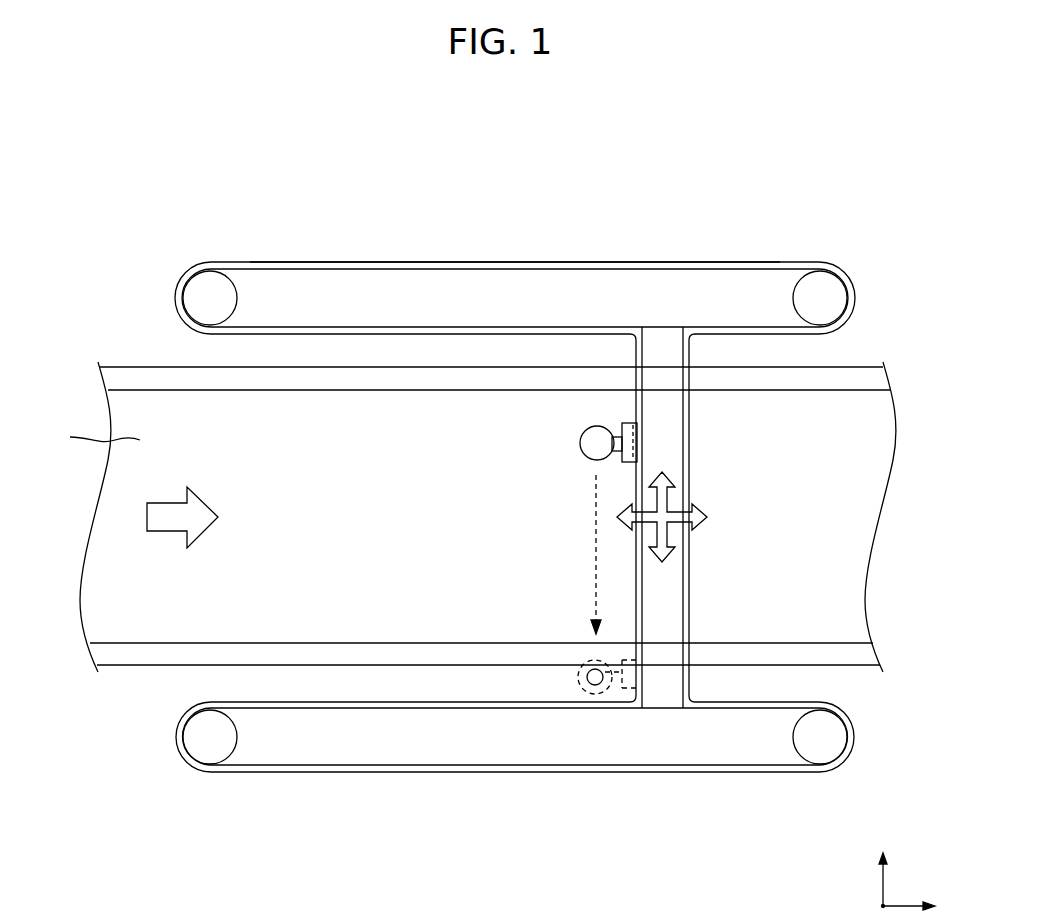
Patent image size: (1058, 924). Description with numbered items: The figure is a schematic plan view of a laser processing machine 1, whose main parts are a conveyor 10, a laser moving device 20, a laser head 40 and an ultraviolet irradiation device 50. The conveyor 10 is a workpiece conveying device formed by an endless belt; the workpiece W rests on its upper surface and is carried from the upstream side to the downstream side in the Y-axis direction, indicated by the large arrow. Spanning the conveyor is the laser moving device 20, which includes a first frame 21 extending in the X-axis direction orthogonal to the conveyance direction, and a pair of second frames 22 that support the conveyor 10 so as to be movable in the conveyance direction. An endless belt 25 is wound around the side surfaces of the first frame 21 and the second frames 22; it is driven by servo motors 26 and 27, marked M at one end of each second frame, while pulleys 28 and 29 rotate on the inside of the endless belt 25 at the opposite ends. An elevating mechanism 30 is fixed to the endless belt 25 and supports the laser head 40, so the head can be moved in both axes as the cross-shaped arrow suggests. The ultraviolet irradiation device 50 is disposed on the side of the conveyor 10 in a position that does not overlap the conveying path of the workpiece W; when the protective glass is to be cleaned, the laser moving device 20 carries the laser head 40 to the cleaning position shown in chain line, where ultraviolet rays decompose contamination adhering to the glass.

The laser processing machine 1 is at (800, 170).
The conveyor 10 is at (134, 354).
The laser moving device 20 is at (639, 256).
The first frame 21 is at (675, 428).
The second frames 22 is at (428, 278).
The endless belt 25 is at (310, 262).
The servo motor 26 is at (212, 278).
The servo motor 27 is at (210, 760).
The pulley 28 is at (820, 275).
The pulley 29 is at (818, 760).
The elevating mechanism 30 is at (622, 425).
The laser head 40 is at (578, 447).
The ultraviolet irradiation device 50 is at (596, 677).